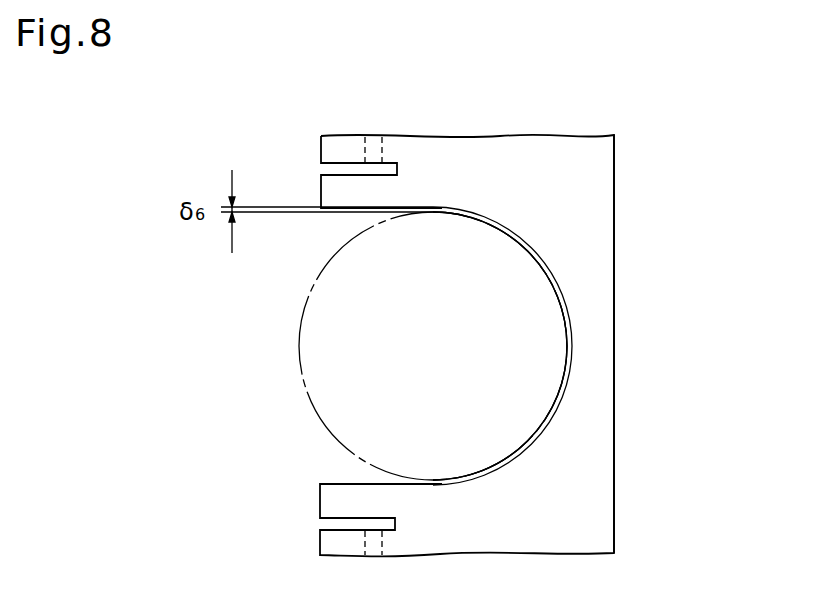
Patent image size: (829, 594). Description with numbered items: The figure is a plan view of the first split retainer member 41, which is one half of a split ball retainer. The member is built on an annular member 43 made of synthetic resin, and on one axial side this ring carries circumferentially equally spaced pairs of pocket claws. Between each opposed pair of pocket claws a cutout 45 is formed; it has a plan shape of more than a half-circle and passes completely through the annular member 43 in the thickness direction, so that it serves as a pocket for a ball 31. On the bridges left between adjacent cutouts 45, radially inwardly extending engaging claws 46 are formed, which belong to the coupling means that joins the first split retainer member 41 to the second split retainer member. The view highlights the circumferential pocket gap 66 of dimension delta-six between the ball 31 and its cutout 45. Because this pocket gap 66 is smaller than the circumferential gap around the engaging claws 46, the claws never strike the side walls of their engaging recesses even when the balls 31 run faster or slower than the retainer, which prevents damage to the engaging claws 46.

The first split retainer member 41 is at (615, 167).
The annular member 43 is at (600, 362).
The cutout 45 is at (552, 290).
The engaging claw 46 is at (371, 148).
The circumferential pocket gap 66 is at (442, 207).
The ball 31 is at (299, 353).